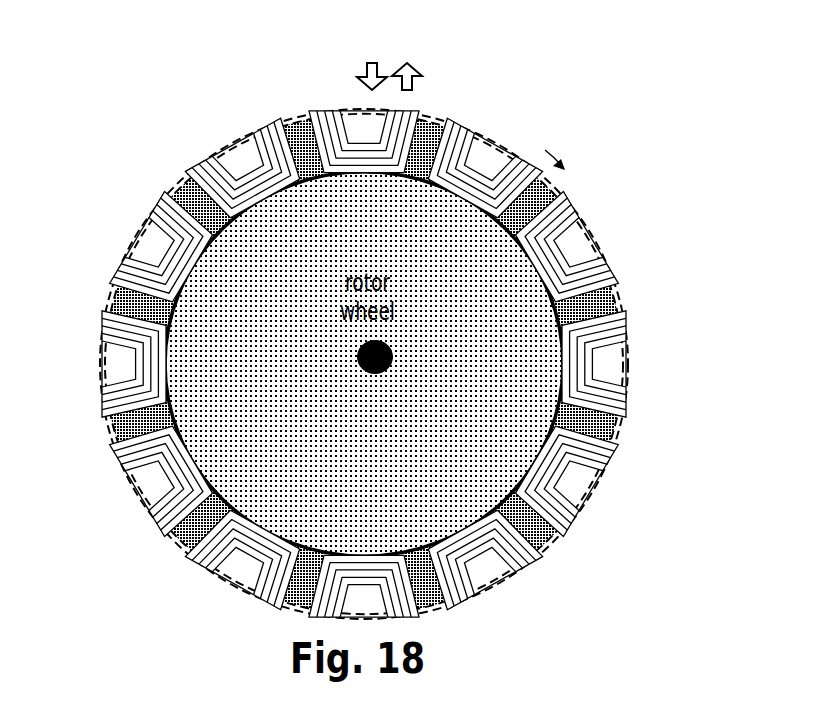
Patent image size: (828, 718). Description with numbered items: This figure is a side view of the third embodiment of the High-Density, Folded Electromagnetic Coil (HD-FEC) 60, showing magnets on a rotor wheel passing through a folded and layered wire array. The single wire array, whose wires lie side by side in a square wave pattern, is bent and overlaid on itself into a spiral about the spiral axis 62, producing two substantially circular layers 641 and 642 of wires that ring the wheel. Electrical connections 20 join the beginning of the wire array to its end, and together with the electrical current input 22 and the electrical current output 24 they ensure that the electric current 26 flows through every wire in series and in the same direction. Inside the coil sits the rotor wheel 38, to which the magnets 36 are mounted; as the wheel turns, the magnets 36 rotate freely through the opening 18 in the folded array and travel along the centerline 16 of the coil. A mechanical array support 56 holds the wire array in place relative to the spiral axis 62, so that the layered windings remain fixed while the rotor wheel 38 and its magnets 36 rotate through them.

The High-Density, Folded Electromagnetic Coil (HD-FEC) 60 is at (115, 118).
The centerline 16 is at (252, 155).
The opening 18 is at (160, 245).
The electrical connections 20 is at (420, 107).
The electrical current input 22 is at (303, 76).
The electrical current output 24 is at (481, 76).
The electric current 26 is at (566, 151).
The magnets 36 is at (192, 205).
The rotor wheel 38 is at (237, 310).
The mechanical array support 56 is at (607, 245).
The spiral axis 62 is at (595, 228).
The first substantially circular layer 641 is at (362, 182).
The second substantially circular layer 642 is at (375, 177).